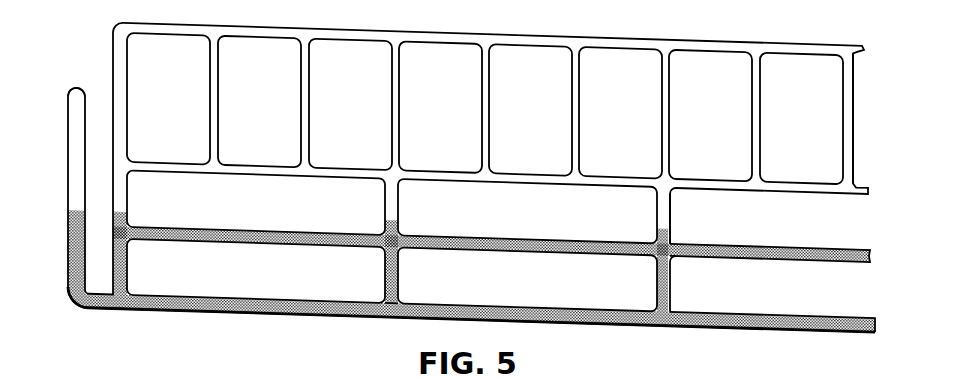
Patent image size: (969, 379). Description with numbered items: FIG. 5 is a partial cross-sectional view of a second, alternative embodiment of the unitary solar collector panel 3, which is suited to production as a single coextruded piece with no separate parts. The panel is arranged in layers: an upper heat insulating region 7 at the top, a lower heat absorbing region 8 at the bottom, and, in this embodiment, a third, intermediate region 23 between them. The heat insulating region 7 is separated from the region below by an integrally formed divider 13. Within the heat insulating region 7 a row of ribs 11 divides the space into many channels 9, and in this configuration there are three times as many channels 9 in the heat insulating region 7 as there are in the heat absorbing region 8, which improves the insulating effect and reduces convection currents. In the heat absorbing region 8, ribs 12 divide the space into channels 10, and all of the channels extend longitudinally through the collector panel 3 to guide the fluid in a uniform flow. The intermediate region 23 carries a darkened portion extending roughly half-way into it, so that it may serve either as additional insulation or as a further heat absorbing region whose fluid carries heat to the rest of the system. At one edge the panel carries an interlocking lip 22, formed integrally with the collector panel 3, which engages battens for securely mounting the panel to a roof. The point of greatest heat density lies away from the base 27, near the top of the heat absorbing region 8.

The collector panel 3 is at (458, 183).
The channels 9 is at (335, 47).
The ribs 11 is at (210, 97).
The divider 13 is at (438, 172).
The heat insulating region 7 is at (866, 147).
The interlocking lip 22 is at (70, 190).
The intermediate region 23 is at (837, 228).
The ribs 12 is at (385, 270).
The heat absorbing region 8 is at (848, 297).
The channels 10 is at (182, 279).
The base 27 is at (392, 318).